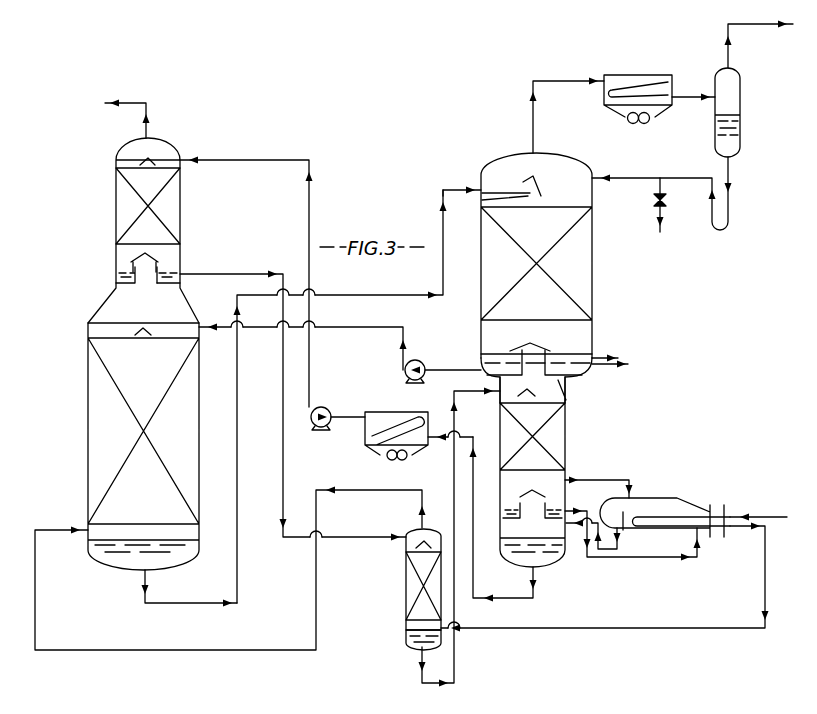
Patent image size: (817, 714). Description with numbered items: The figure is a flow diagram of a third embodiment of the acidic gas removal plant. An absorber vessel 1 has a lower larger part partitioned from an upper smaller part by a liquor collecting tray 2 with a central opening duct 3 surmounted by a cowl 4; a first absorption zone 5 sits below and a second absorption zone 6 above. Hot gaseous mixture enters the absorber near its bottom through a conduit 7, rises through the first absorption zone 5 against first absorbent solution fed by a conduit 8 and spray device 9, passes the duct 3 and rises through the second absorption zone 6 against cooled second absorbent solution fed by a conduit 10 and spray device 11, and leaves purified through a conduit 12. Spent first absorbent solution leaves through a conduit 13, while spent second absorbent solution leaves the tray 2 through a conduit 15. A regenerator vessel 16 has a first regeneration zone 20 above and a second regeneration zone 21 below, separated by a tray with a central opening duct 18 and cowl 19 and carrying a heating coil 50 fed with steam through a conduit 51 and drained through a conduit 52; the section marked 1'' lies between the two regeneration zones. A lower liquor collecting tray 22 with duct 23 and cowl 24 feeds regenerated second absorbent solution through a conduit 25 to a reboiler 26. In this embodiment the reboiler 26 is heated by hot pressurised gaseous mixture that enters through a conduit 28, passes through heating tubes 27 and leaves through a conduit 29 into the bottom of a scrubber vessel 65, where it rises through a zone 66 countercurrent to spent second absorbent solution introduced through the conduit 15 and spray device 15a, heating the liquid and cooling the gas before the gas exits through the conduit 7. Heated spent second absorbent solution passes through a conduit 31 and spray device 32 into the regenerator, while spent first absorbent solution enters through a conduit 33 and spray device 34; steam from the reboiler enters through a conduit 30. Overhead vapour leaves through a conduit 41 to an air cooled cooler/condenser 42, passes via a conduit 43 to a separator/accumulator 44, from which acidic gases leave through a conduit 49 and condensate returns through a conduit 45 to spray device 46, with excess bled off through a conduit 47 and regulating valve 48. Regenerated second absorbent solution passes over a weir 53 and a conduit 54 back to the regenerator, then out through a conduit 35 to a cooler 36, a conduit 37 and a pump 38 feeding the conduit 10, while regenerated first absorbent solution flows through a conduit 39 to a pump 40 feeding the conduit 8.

The absorber vessel 1 is at (150, 230).
The lower column section connection 1'' is at (553, 395).
The liquor collecting tray 2 is at (125, 284).
The central opening duct 3 is at (135, 270).
The cowl 4 is at (128, 252).
The first absorption zone 5 is at (185, 420).
The second absorption zone 6 is at (172, 215).
The conduit 7 is at (436, 508).
The conduit 8 is at (403, 347).
The spray device 9 is at (135, 330).
The conduit 10 is at (326, 368).
The spray device 11 is at (145, 160).
The conduit 12 is at (150, 122).
The conduit 13 is at (148, 580).
The conduit 15 is at (350, 553).
The spray device 15a is at (417, 548).
The regenerator vessel 16 is at (593, 342).
The central opening duct 18 is at (512, 372).
The cowl 19 is at (512, 348).
The first regeneration zone 20 is at (578, 268).
The second regeneration zone 21 is at (555, 440).
The liquor collecting tray 22 is at (520, 522).
The central opening duct 23 is at (508, 512).
The cowl 24 is at (522, 494).
The conduit 25 is at (642, 560).
The reboiler 26 is at (652, 498).
The heating tubes 27 is at (690, 517).
The conduit 28 is at (745, 515).
The conduit 29 is at (745, 554).
The conduit 30 is at (600, 480).
The conduit 31 is at (421, 660).
The spray device 32 is at (512, 392).
The conduit 33 is at (450, 188).
The spray device 34 is at (495, 198).
The conduit 35 is at (548, 572).
The cooler 36 is at (402, 410).
The conduit 37 is at (343, 410).
The pump 38 is at (312, 424).
The conduit 39 is at (445, 368).
The pump 40 is at (406, 378).
The conduit 41 is at (535, 122).
The air cooled cooler/condenser 42 is at (636, 75).
The conduit 43 is at (688, 96).
The separator/accumulator 44 is at (740, 104).
The conduit 45 is at (746, 170).
The spray device 46 is at (535, 178).
The conduit 47 is at (662, 210).
The regulating valve 48 is at (667, 197).
The conduit 49 is at (730, 50).
The heating coil 50 is at (490, 365).
The conduit 51 is at (634, 348).
The conduit 52 is at (612, 368).
The weir 53 is at (626, 528).
The conduit 54 is at (609, 538).
The scrubber vessel 65 is at (406, 626).
The zone 66 is at (410, 588).